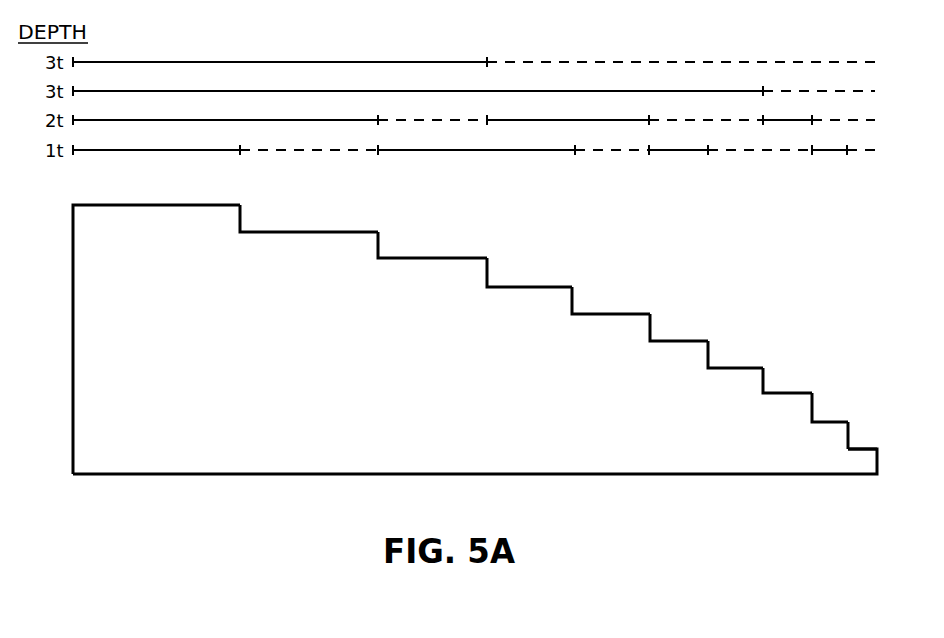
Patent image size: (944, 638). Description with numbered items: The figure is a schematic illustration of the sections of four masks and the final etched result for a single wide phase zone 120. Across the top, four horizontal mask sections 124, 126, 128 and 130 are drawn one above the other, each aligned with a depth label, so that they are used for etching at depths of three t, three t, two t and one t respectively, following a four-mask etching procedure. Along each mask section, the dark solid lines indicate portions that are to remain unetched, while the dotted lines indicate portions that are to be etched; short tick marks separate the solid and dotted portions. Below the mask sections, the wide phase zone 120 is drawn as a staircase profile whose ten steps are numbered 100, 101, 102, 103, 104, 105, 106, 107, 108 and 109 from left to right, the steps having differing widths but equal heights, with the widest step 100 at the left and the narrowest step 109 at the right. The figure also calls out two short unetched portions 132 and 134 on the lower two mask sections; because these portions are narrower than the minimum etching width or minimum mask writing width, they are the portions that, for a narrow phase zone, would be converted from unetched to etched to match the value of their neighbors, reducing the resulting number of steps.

The wide phase zone 120 is at (455, 366).
The mask section 124 is at (76, 61).
The mask section 126 is at (76, 90).
The mask section 128 is at (76, 121).
The mask section 130 is at (77, 152).
The portion 132 is at (781, 121).
The portion 134 is at (831, 150).
The step 100 is at (261, 355).
The step 101 is at (391, 369).
The step 102 is at (495, 382).
The step 103 is at (582, 396).
The step 104 is at (652, 410).
The step 105 is at (713, 423).
The step 106 is at (767, 437).
The step 107 is at (810, 453).
The step 108 is at (831, 464).
The step 109 is at (865, 481).